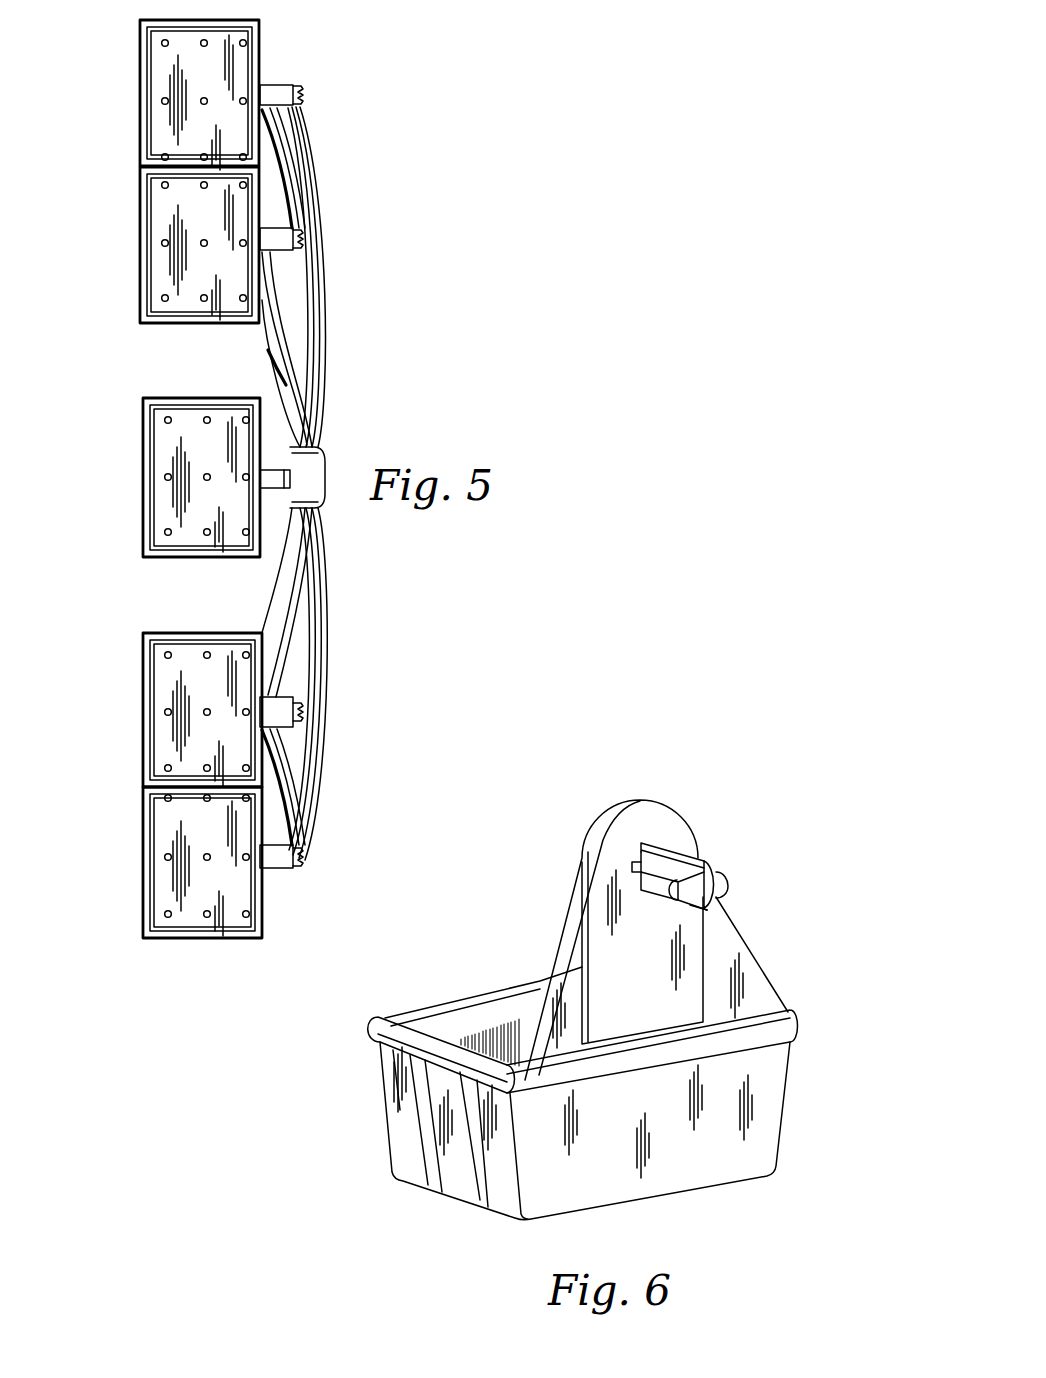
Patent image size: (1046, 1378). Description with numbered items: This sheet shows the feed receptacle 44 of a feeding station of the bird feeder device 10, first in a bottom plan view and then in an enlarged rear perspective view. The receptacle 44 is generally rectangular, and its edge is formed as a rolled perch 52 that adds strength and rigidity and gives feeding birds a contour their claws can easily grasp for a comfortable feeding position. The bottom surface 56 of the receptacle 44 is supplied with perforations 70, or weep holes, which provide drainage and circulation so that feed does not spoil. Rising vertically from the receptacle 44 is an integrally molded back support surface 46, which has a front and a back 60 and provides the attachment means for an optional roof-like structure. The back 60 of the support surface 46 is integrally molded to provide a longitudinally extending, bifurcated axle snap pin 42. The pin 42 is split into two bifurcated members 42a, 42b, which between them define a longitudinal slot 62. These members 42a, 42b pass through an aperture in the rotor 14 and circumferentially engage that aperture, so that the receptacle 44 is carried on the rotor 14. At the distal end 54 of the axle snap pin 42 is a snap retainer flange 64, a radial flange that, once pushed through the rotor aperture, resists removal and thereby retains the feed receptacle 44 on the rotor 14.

In FIG. 5, the bird feeder device 10 is at (352, 293).
In FIG. 5, the rotor 14 is at (322, 690).
In FIG. 5, the feed receptacle 44 is at (111, 708).
In FIG. 6, the feed receptacle 44 is at (812, 886).
In FIG. 5, the bottom surface 56 is at (168, 748).
In FIG. 5, the perforations 70 is at (203, 858).
In FIG. 6, the axle snap pin 42 is at (710, 827).
In FIG. 6, the bifurcated member 42a is at (717, 868).
In FIG. 6, the bifurcated member 42b is at (657, 857).
In FIG. 6, the back support surface 46 is at (566, 905).
In FIG. 6, the rolled perch 52 is at (372, 1022).
In FIG. 6, the distal end 54 is at (721, 885).
In FIG. 6, the back 60 is at (561, 937).
In FIG. 6, the longitudinal slot 62 is at (713, 907).
In FIG. 6, the snap retainer flange 64 is at (652, 887).